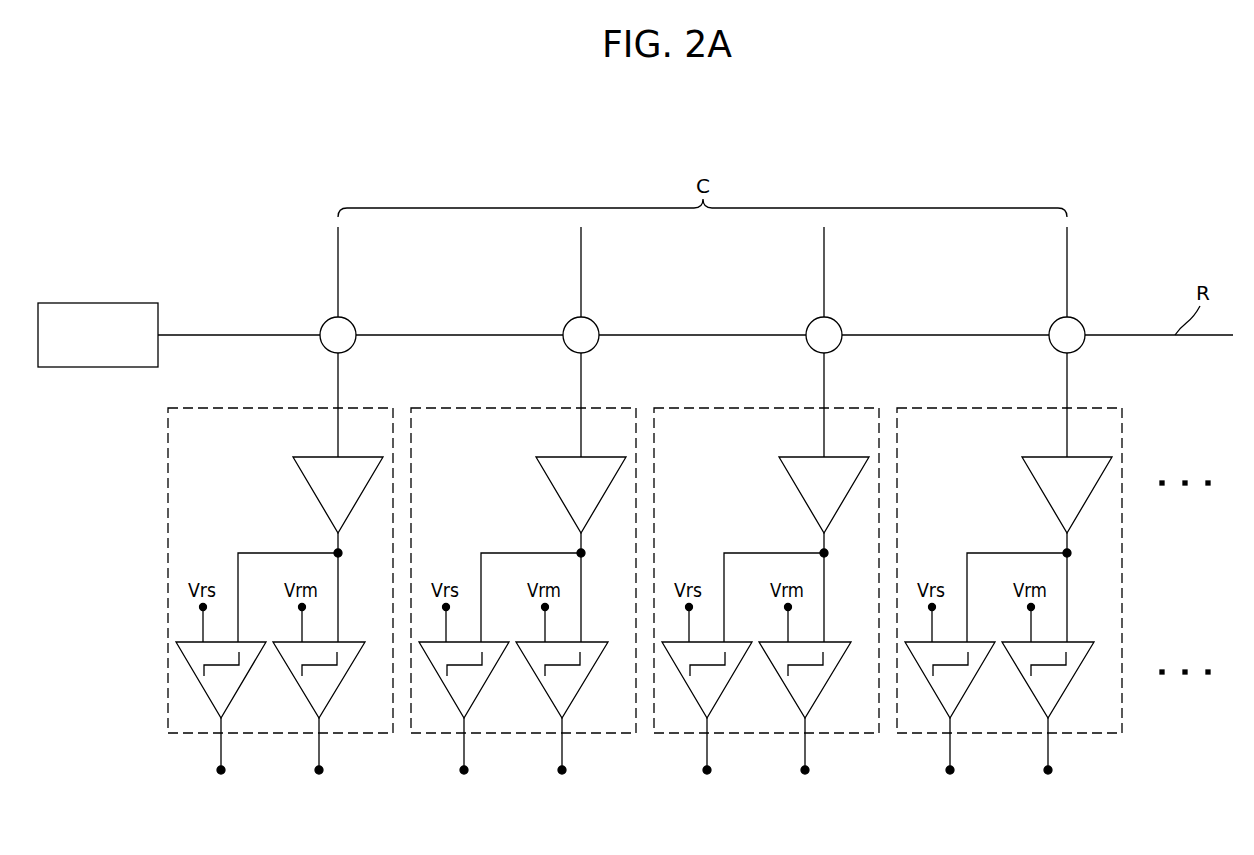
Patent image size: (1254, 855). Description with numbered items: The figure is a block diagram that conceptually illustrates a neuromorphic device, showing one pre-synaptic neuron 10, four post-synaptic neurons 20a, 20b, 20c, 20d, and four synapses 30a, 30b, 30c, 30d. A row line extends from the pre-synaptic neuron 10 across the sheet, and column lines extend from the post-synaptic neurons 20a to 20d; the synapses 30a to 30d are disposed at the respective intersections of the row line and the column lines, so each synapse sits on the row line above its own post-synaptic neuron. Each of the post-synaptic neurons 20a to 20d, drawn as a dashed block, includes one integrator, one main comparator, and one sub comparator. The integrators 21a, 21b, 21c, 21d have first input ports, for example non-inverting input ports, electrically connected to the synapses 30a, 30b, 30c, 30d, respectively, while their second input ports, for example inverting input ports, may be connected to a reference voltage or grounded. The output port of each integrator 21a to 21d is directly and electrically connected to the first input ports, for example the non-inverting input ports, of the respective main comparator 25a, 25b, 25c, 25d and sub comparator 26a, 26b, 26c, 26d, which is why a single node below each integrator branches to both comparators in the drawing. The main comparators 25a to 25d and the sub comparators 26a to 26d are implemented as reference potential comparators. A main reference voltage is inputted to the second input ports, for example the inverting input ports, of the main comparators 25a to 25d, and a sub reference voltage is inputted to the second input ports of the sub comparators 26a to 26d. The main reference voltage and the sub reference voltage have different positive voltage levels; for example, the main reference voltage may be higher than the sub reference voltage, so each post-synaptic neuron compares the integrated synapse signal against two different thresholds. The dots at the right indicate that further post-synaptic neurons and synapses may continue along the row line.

The pre-synaptic neuron 10 is at (138, 303).
The post-synaptic neuron 20a is at (280, 570).
The post-synaptic neuron 20b is at (523, 570).
The post-synaptic neuron 20c is at (766, 570).
The post-synaptic neuron 20d is at (1009, 570).
The integrator 21a is at (310, 490).
The integrator 21b is at (551, 507).
The integrator 21c is at (794, 507).
The integrator 21d is at (1037, 507).
The main comparator 25a is at (300, 690).
The main comparator 25b is at (550, 718).
The main comparator 25c is at (793, 718).
The main comparator 25d is at (1036, 718).
The sub comparator 26a is at (203, 690).
The sub comparator 26b is at (451, 718).
The sub comparator 26c is at (694, 718).
The sub comparator 26d is at (937, 718).
The synapse 30a is at (343, 328).
The synapse 30b is at (598, 342).
The synapse 30c is at (841, 342).
The synapse 30d is at (1084, 342).